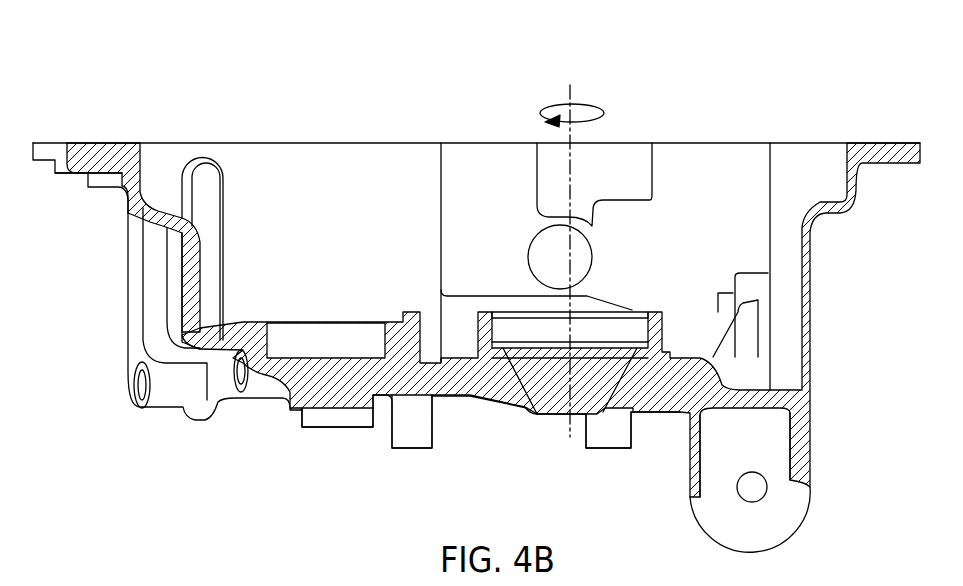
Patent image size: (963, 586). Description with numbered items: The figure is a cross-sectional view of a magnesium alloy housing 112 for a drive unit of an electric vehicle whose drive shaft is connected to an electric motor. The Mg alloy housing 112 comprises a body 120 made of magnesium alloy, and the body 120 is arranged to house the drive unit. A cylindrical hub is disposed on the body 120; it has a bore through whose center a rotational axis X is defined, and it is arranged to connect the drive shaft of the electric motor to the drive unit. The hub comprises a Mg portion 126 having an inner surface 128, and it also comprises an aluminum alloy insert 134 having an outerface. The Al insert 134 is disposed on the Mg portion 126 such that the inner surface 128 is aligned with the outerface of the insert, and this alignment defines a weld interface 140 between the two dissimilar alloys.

The Mg alloy housing 112 is at (176, 74).
The body 120 is at (82, 174).
The Al insert 134 is at (622, 323).
The inner surface 128 is at (523, 346).
The weld interface 140 is at (583, 344).
The Mg portion 126 is at (640, 350).